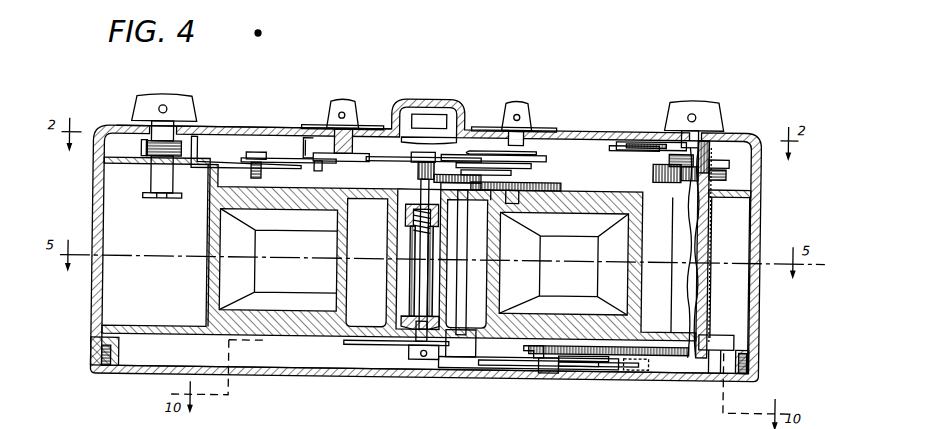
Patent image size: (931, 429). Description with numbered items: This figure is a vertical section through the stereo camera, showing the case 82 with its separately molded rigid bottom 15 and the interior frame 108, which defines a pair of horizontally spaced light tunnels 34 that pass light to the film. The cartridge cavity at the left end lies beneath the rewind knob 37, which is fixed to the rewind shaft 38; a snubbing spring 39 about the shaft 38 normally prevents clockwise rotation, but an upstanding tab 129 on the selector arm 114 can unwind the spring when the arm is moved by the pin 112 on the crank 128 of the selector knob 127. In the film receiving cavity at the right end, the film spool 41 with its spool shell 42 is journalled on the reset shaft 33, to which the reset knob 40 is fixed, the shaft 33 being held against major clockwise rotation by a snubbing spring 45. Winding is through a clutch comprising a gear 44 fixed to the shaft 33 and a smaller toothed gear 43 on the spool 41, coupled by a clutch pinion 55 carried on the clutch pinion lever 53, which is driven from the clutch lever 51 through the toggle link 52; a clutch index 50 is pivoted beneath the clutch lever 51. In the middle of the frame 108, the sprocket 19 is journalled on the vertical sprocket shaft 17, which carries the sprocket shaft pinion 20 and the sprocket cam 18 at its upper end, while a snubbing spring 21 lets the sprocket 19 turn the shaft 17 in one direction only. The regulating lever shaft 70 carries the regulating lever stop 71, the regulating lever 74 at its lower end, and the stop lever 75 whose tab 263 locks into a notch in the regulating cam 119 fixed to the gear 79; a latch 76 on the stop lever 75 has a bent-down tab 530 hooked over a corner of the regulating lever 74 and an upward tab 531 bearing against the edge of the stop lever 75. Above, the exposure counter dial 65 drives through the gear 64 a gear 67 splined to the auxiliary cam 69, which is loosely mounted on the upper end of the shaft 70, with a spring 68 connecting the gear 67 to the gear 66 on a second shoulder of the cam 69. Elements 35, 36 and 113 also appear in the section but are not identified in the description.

The bottom 15 is at (380, 371).
The sprocket shaft 17 is at (418, 236).
The sprocket cam 18 is at (398, 158).
The sprocket 19 is at (410, 282).
The sprocket shaft pinion 20 is at (415, 164).
The snubbing spring 21 is at (413, 217).
The reset shaft 33 is at (708, 216).
The light tunnels 34 is at (282, 254).
The bracket 35 is at (385, 341).
The block 36 is at (708, 340).
The rewind knob 37 is at (130, 100).
The rewind shaft 38 is at (150, 178).
The snubbing spring 39 is at (145, 147).
The reset knob 40 is at (706, 103).
The film spool 41 is at (711, 229).
The spool shell 42 is at (712, 281).
The toothed gear 43 is at (719, 172).
The gear 44 is at (718, 158).
The snubbing spring 45 is at (724, 138).
The clutch index 50 is at (518, 153).
The clutch lever 51 is at (490, 147).
The toggle link 52 is at (615, 139).
The clutch pinion lever 53 is at (668, 128).
The clutch pinion 55 is at (652, 167).
The gear 64 is at (535, 180).
The exposure counter dial 65 is at (531, 112).
The gear 66 is at (490, 188).
The gear 67 is at (462, 180).
The spring 68 is at (462, 202).
The auxiliary cam 69 is at (490, 161).
The regulating lever shaft 70 is at (462, 247).
The regulating lever stop 71 is at (510, 168).
The regulating lever 74 is at (503, 365).
The stop lever 75 is at (490, 347).
The latch 76 is at (546, 363).
The gear 79 is at (575, 342).
The case 82 is at (233, 125).
The frame 108 is at (210, 226).
The pin 112 is at (313, 164).
The clip 113 is at (302, 146).
The selector arm 114 is at (278, 156).
The regulating cam 119 is at (580, 362).
The selector knob 127 is at (325, 104).
The crank 128 is at (340, 158).
The tab 129 is at (197, 147).
The tab 263 is at (600, 366).
The tab 530 is at (557, 366).
The tab 531 is at (538, 348).